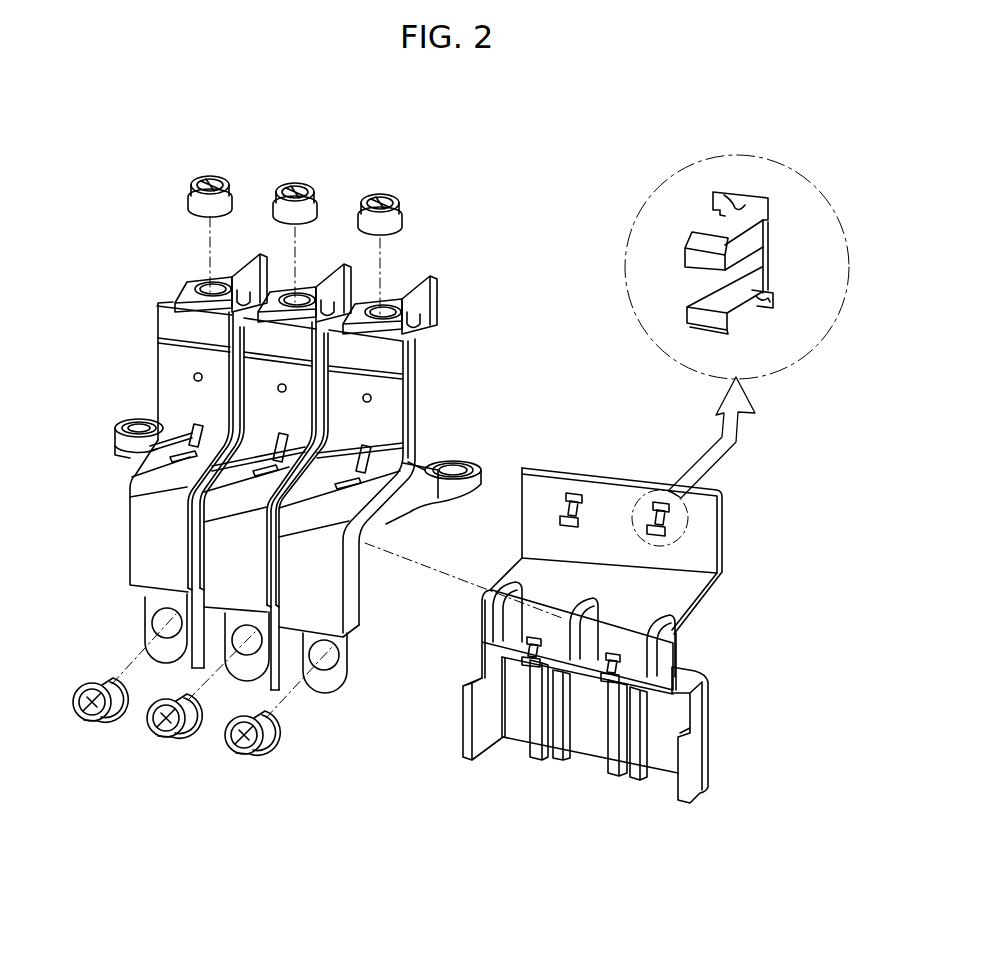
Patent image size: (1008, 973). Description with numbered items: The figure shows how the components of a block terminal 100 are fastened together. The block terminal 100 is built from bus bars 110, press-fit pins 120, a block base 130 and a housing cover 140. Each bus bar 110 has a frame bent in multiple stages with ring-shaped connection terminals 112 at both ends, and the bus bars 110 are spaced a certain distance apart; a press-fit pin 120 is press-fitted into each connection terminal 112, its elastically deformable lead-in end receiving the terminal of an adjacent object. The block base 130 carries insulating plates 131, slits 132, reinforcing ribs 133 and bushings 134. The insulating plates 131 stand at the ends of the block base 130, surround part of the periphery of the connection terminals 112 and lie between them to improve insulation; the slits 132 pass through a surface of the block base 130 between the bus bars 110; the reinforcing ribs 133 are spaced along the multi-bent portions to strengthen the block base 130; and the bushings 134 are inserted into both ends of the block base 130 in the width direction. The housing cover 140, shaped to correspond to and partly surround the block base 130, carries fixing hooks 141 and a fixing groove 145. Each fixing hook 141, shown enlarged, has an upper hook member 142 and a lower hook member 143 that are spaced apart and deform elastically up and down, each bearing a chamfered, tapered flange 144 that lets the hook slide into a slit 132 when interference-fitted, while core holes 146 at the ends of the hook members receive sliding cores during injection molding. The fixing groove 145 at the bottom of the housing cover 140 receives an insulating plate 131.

The block terminal 100 is at (498, 128).
The bus bar 110 is at (185, 284).
The connection terminal 112 is at (163, 603).
The press-fit pin 120 is at (185, 186).
The block base 130 is at (153, 375).
The insulating plate 131 is at (295, 682).
The slit 132 is at (328, 420).
The reinforcing rib 133 is at (182, 442).
The bushing 134 is at (441, 460).
The housing cover 140 is at (715, 647).
The fixing hook 141 is at (775, 262).
The upper hook member 142 is at (747, 247).
The lower hook member 143 is at (757, 292).
The flange 144 is at (703, 327).
The fixing groove 145 is at (625, 774).
The core hole 146 is at (726, 190).